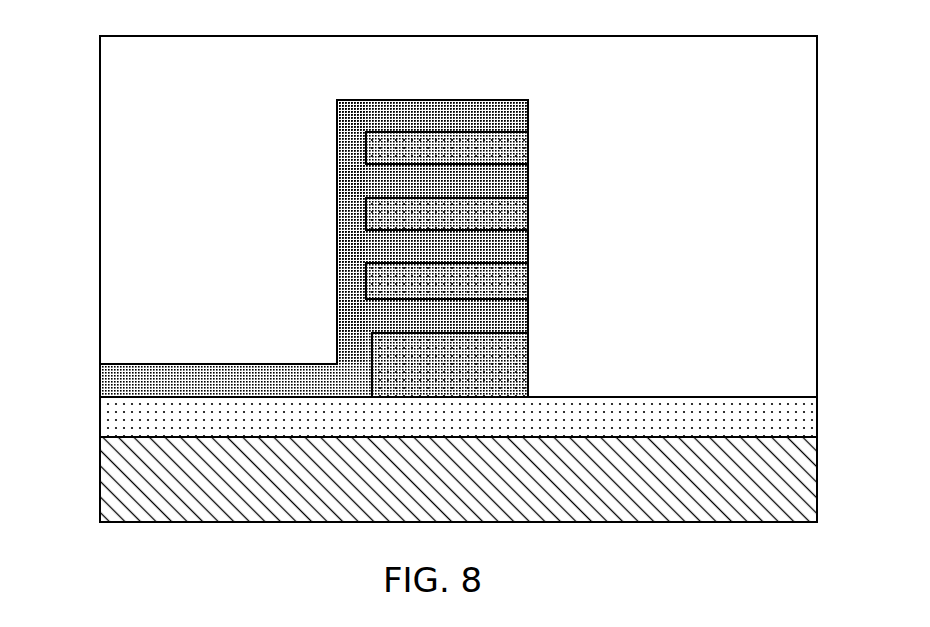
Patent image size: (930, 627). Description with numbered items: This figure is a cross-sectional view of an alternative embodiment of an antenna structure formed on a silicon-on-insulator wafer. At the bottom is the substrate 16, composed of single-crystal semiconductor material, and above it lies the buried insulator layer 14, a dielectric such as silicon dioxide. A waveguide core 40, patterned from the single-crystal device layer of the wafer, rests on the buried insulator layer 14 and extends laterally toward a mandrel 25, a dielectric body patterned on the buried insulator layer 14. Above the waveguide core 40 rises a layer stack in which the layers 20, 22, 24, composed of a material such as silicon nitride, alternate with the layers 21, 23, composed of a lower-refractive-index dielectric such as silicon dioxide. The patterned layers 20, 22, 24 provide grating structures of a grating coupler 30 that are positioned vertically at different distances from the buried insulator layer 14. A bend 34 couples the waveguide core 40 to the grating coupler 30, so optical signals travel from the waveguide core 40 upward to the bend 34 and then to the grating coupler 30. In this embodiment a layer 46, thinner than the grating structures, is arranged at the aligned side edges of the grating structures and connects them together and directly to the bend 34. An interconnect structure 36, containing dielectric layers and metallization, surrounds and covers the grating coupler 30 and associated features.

The grating coupler 30 is at (453, 279).
The interconnect structure 36 is at (120, 185).
The layer 24 is at (388, 120).
The layer 23 is at (505, 148).
The layer 22 is at (387, 185).
The layer 46 is at (350, 216).
The layer 21 is at (505, 216).
The layer 20 is at (390, 248).
The bend 34 is at (413, 318).
The waveguide core 40 is at (135, 378).
The mandrel 25 is at (455, 368).
The buried insulator layer 14 is at (785, 418).
The substrate 16 is at (785, 490).